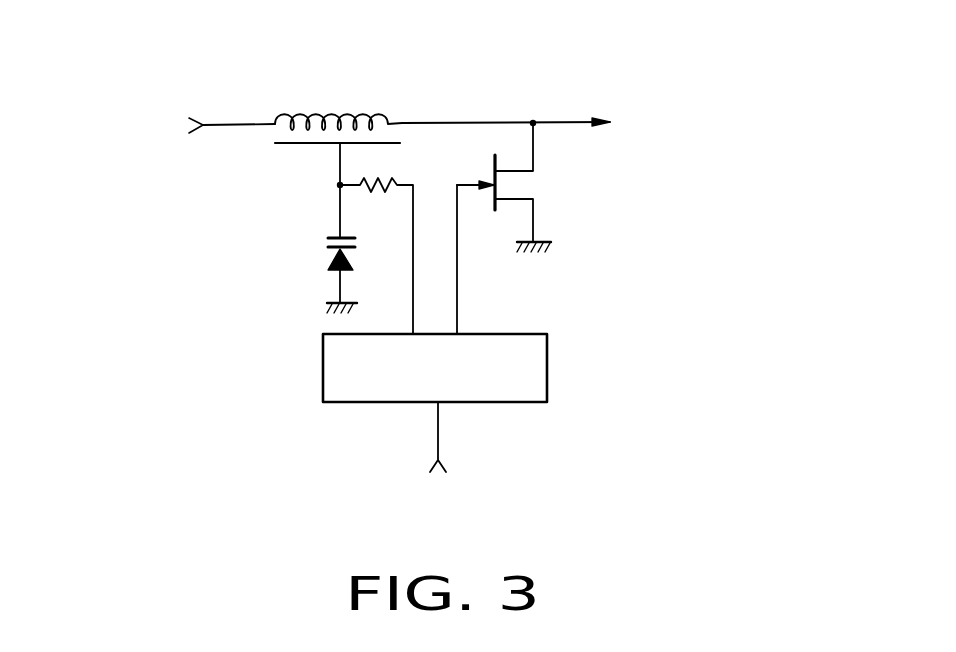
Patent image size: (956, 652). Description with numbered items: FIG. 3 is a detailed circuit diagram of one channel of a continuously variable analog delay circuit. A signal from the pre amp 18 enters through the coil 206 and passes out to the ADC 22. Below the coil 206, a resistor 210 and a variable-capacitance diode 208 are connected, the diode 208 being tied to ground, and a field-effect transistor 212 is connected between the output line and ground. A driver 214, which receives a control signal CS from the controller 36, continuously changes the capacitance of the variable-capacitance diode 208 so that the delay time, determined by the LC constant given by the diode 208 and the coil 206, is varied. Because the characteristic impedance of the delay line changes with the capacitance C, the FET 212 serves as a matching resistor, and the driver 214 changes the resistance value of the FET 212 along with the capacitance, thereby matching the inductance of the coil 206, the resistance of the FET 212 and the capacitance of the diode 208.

The preamplifier 18 is at (151, 129).
The analog-to-digital converter (ADC) 22 is at (560, 124).
The controller 36 is at (591, 467).
The coil 206 is at (376, 108).
The variable-capacitance diode 208 is at (327, 268).
The resistor 210 is at (400, 182).
The field-effect transistor 212 is at (492, 217).
The driver 214 is at (550, 345).